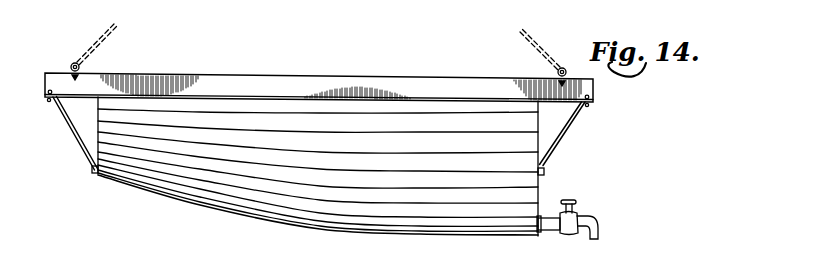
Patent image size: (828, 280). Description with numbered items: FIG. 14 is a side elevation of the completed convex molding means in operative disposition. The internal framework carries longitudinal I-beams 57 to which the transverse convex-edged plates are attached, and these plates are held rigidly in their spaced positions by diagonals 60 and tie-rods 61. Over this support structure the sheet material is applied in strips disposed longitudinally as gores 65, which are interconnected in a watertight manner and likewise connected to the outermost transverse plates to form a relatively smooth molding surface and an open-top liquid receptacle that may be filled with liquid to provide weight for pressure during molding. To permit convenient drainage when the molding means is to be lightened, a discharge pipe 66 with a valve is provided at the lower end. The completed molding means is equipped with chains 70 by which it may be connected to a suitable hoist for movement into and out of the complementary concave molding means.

The longitudinal I-beam 57 is at (333, 92).
The diagonal 60 is at (71, 126).
The tie-rod 61 is at (91, 170).
The longitudinal gore 65 is at (248, 181).
The discharge pipe 66 is at (553, 232).
The chain 70 is at (95, 45).